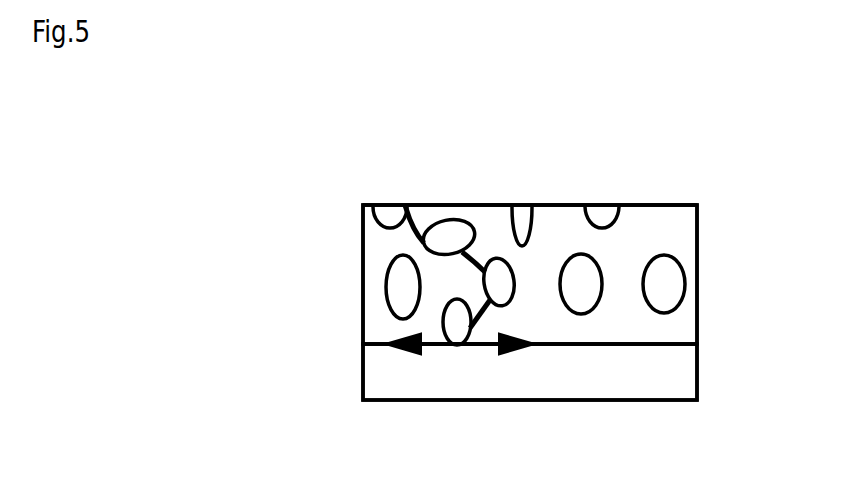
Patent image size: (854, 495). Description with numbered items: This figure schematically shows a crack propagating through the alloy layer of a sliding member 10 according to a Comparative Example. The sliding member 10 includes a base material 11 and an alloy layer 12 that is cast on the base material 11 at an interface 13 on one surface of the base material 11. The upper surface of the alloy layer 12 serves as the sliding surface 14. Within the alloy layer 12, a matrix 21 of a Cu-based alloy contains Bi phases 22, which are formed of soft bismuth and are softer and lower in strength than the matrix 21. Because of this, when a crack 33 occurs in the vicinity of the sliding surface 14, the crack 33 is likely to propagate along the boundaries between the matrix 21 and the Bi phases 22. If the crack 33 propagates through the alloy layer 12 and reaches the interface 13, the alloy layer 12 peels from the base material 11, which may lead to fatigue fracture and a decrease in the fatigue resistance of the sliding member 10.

The sliding member 10 is at (302, 243).
The base material 11 is at (363, 375).
The alloy layer 12 is at (363, 290).
The interface 13 is at (680, 344).
The sliding surface 14 is at (670, 205).
The matrix 21 is at (603, 332).
The Bi phases 22 is at (618, 209).
The crack 33 is at (422, 215).